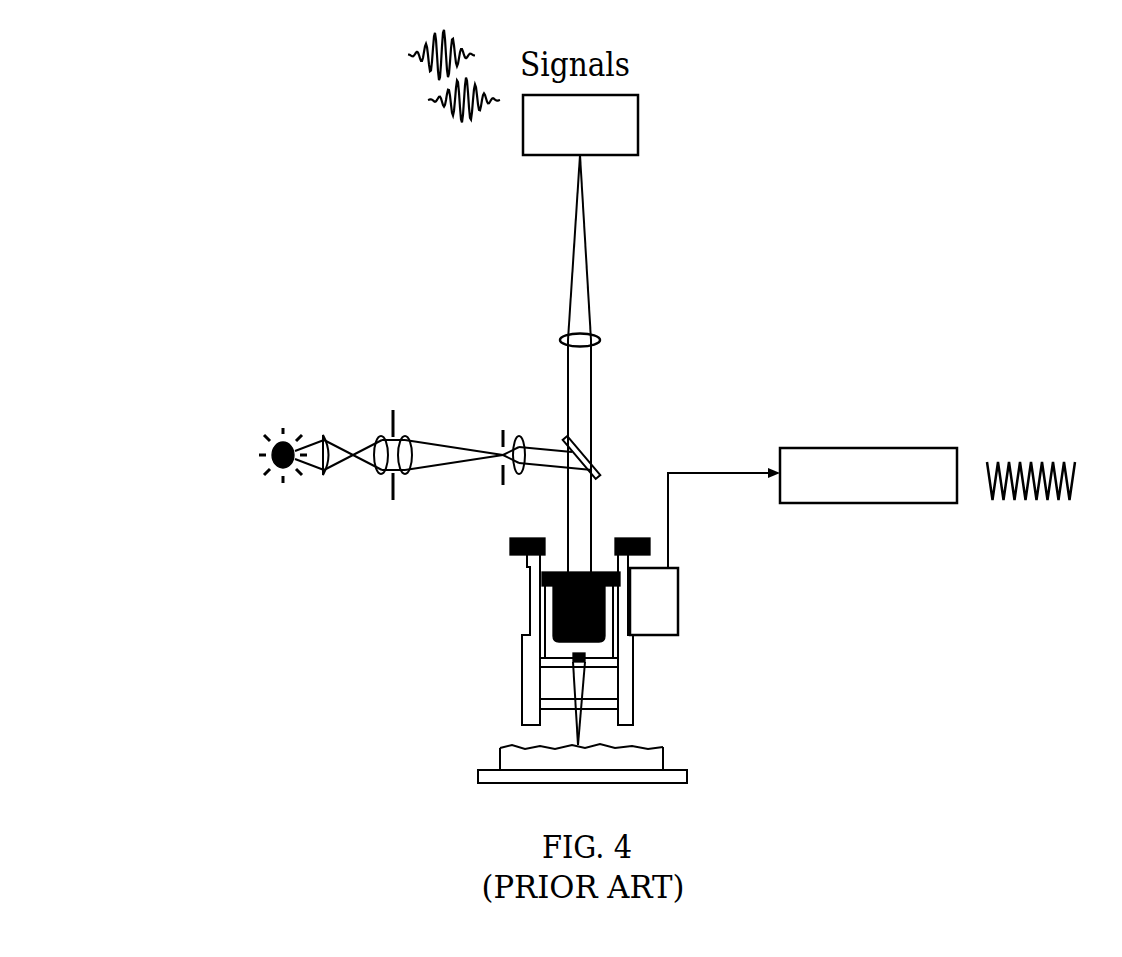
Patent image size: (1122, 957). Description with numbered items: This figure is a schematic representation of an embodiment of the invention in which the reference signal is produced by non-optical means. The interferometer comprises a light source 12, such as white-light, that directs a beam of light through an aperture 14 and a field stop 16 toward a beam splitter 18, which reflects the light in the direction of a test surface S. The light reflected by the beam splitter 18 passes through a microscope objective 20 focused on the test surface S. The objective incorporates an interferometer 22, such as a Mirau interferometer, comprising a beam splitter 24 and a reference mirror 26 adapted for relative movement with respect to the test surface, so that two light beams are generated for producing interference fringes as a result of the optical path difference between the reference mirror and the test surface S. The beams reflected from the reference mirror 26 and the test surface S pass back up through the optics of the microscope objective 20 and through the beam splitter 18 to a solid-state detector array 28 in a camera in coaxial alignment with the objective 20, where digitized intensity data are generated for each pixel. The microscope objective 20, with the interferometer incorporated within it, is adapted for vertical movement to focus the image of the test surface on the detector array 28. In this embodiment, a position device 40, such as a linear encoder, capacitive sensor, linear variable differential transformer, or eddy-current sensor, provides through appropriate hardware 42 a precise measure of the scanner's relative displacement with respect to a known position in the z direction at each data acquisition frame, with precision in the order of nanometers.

The light source 12 is at (281, 434).
The aperture 14 is at (392, 422).
The field stop 16 is at (502, 437).
The beam splitter 18 is at (595, 465).
The microscope objective 20 is at (553, 603).
The interferometer 22 is at (640, 652).
The beam splitter 24 is at (618, 702).
The reference mirror 26 is at (538, 673).
The solid-state detector array 28 is at (640, 125).
The position device 40 is at (680, 580).
The hardware 42 is at (877, 447).
The test surface S is at (650, 752).